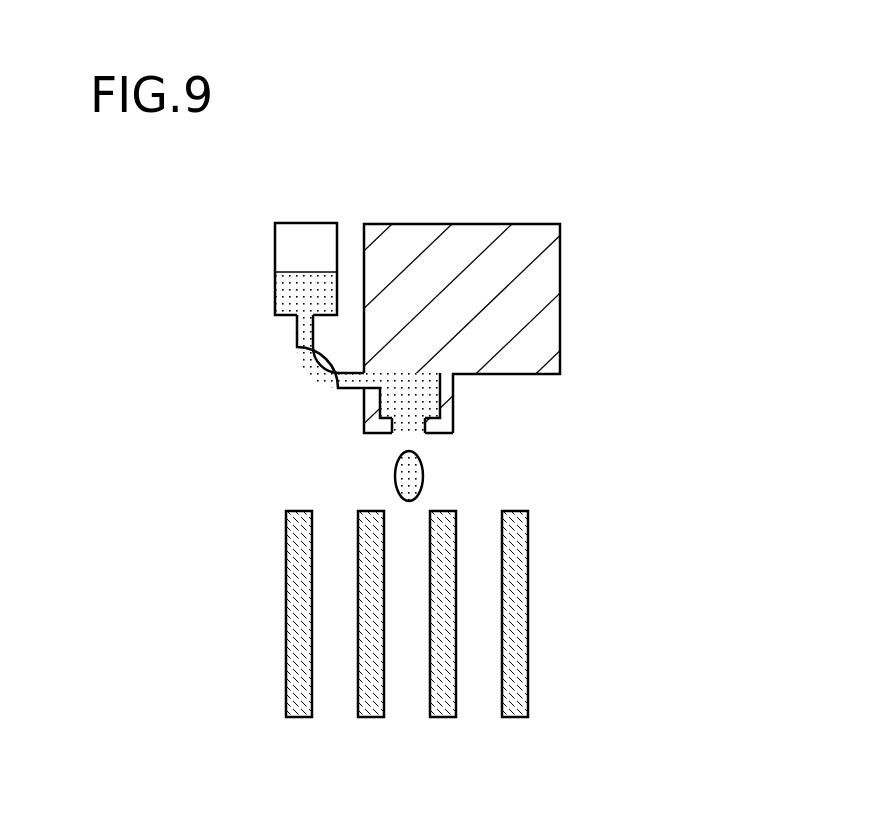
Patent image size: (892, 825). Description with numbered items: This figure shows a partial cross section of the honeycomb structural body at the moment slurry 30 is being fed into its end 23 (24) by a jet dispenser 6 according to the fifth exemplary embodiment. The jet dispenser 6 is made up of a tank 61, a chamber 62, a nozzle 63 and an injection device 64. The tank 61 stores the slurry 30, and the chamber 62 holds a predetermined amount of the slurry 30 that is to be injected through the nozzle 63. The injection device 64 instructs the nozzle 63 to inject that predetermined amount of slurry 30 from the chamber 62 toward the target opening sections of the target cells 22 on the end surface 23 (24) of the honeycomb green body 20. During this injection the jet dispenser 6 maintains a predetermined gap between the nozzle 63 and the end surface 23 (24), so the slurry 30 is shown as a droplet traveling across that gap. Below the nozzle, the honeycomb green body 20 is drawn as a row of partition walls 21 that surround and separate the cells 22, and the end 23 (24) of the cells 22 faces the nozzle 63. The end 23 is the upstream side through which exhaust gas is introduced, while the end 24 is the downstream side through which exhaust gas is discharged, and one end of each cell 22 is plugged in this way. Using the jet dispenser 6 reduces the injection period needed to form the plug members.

The jet dispenser 6 is at (437, 223).
The injection device 64 is at (515, 260).
The tank 61 is at (275, 240).
The slurry 30 is at (290, 295).
The chamber 62 is at (380, 403).
The nozzle 63 is at (411, 436).
The end 23 is at (330, 515).
The end 24 is at (200, 496).
The cell 22 is at (333, 644).
The partition wall 21 is at (515, 717).
The honeycomb green body 20 is at (370, 614).